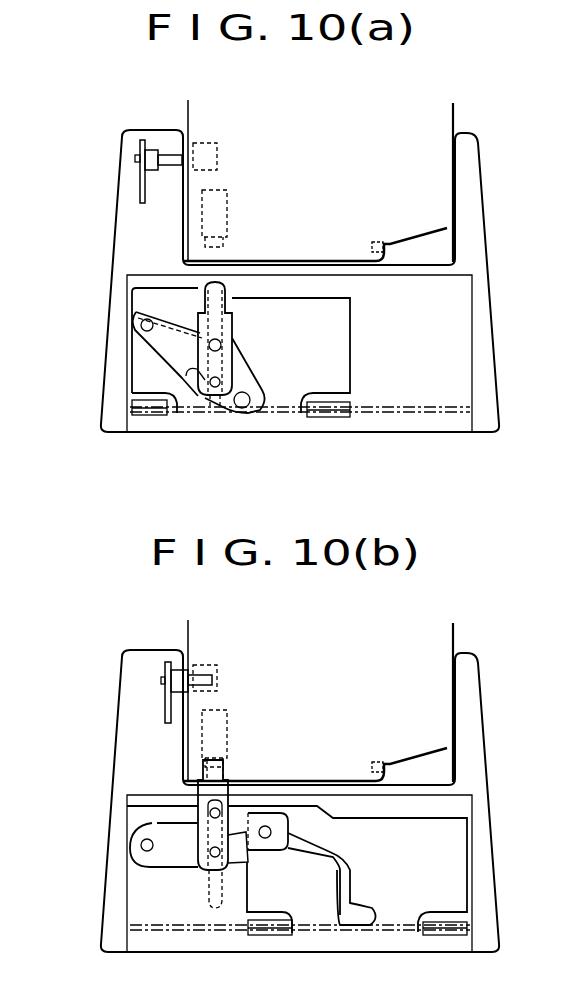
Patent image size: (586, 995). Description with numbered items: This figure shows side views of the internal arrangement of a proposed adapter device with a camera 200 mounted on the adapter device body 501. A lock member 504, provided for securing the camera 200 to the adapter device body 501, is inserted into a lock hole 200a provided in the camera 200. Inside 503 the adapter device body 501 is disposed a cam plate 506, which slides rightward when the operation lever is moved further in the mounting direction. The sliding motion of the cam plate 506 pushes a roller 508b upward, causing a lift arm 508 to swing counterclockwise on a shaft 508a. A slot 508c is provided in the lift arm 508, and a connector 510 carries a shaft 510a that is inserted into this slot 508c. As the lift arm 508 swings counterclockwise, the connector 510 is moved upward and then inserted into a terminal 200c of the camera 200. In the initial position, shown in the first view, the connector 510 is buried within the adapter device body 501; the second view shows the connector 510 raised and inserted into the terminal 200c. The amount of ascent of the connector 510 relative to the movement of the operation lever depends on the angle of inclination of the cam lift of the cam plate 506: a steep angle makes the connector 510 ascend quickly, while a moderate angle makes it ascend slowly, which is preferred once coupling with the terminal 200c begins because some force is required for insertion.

In FIG. 10A, the camera 200 is at (453, 126).
In FIG. 10B, the camera 200 is at (453, 645).
In FIG. 10A, the lock hole 200a is at (207, 140).
In FIG. 10B, the lock hole 200a is at (207, 663).
In FIG. 10A, the terminal 200c is at (225, 195).
In FIG. 10B, the terminal 200c is at (232, 720).
In FIG. 10A, the adapter device body 501 is at (490, 243).
In FIG. 10B, the adapter device body 501 is at (490, 787).
In FIG. 10A, the inside of the adapter device body 503 is at (457, 383).
In FIG. 10A, the lock member 504 is at (172, 158).
In FIG. 10B, the lock member 504 is at (175, 682).
In FIG. 10A, the cam plate 506 is at (317, 298).
In FIG. 10B, the cam plate 506 is at (455, 886).
In FIG. 10A, the lift arm 508 is at (160, 350).
In FIG. 10B, the lift arm 508 is at (165, 862).
In FIG. 10A, the shaft 508a is at (140, 316).
In FIG. 10A, the roller 508b is at (243, 410).
In FIG. 10A, the slot 508c is at (177, 370).
In FIG. 10A, the connector 510 is at (232, 303).
In FIG. 10B, the connector 510 is at (217, 778).
In FIG. 10A, the shaft 510a is at (212, 405).